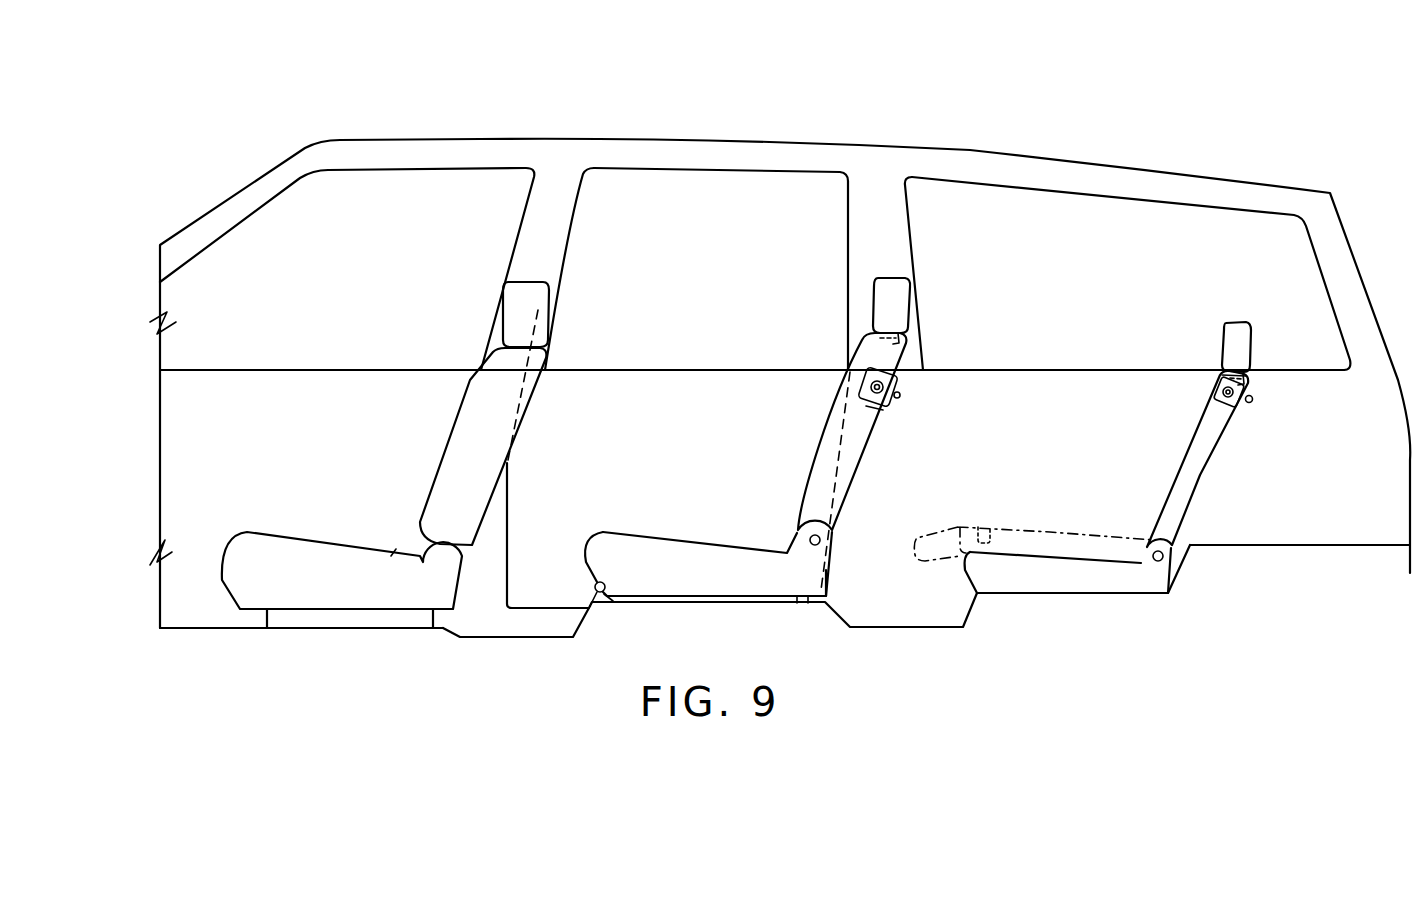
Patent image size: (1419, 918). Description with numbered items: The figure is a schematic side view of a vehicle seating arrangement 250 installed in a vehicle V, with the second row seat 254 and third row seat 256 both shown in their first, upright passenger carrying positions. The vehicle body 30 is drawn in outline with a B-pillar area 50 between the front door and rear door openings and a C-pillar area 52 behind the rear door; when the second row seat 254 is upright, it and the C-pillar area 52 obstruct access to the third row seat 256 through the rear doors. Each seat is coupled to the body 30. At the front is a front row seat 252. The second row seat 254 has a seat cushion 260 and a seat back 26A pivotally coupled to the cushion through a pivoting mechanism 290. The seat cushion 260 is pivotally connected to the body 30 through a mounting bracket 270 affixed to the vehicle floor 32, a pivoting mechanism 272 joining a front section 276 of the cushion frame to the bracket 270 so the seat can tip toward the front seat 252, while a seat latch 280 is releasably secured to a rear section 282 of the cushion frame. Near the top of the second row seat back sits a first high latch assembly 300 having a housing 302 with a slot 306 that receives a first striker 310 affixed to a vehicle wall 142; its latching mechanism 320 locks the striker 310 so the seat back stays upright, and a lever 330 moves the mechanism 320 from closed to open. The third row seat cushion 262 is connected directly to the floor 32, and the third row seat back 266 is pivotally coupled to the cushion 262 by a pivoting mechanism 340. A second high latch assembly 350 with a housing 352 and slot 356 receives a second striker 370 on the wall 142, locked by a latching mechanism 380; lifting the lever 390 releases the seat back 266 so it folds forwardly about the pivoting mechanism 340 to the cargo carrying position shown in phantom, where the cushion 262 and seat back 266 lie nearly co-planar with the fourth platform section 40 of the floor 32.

The vehicle V is at (528, 112).
The vehicle body 30 is at (905, 630).
The vehicle floor 32 is at (530, 640).
The fourth platform section 40 is at (1305, 548).
The B-pillar area 50 is at (556, 180).
The C-pillar area 52 is at (888, 190).
The vehicle wall 142 is at (995, 398).
The vehicle seating arrangement 250 is at (743, 200).
The front row seat 252 is at (316, 465).
The second row seat 254 is at (702, 472).
The third row seat 256 is at (1072, 443).
The second row seat back 26A is at (825, 452).
The seat cushion 260 is at (710, 544).
The seat cushion 262 is at (1048, 580).
The seat back 266 is at (1203, 468).
The mounting bracket 270 is at (596, 607).
The pivoting mechanism 272 is at (606, 590).
The front section 276 is at (596, 553).
The seat latch 280 is at (806, 607).
The rear section 282 is at (812, 588).
The pivoting mechanism 290 is at (808, 538).
The first high latch assembly 300 is at (878, 387).
The housing 302 is at (868, 366).
The slot 306 is at (878, 410).
The first striker 310 is at (901, 394).
The latching mechanism 320 is at (897, 374).
The lever 330 is at (900, 330).
The pivoting mechanism 340 is at (1158, 562).
The second high latch assembly 350 is at (1233, 392).
The housing 352 is at (1218, 393).
The slot 356 is at (1244, 407).
The second striker 370 is at (1254, 397).
The latching mechanism 380 is at (1244, 385).
The lever 390 is at (1245, 370).